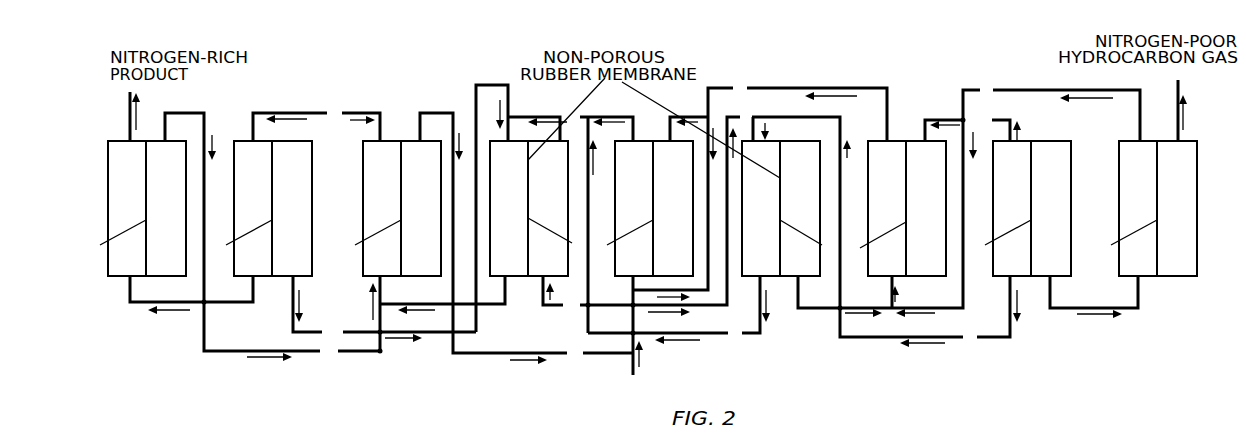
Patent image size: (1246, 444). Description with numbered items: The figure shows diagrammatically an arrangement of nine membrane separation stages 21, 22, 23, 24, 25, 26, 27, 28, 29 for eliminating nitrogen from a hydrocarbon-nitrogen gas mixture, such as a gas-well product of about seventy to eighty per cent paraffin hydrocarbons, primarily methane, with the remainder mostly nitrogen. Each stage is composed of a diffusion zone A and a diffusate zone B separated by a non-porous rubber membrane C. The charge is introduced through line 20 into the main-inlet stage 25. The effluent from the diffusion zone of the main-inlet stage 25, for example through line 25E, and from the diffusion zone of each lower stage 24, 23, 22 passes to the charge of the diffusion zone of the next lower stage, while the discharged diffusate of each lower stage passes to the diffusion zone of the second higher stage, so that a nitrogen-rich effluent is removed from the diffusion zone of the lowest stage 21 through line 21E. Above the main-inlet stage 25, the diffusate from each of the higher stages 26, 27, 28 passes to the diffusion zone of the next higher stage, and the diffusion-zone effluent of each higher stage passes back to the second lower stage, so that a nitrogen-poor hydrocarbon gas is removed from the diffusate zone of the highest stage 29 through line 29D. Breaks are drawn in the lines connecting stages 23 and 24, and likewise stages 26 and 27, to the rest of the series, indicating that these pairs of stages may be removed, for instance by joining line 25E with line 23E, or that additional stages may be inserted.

The charge line 20 is at (632, 364).
The separation stage 21 is at (108, 206).
The effluent line 21E is at (128, 103).
The separation stage 22 is at (234, 206).
The separation stage 23 is at (363, 208).
The effluent line 23E is at (310, 113).
The separation stage 24 is at (555, 278).
The main-inlet stage 25 is at (615, 206).
The effluent line 25E is at (613, 117).
The separation stage 26 is at (818, 209).
The separation stage 27 is at (868, 209).
The separation stage 28 is at (993, 208).
The separation stage 29 is at (1119, 208).
The diffusate line 29D is at (1180, 85).